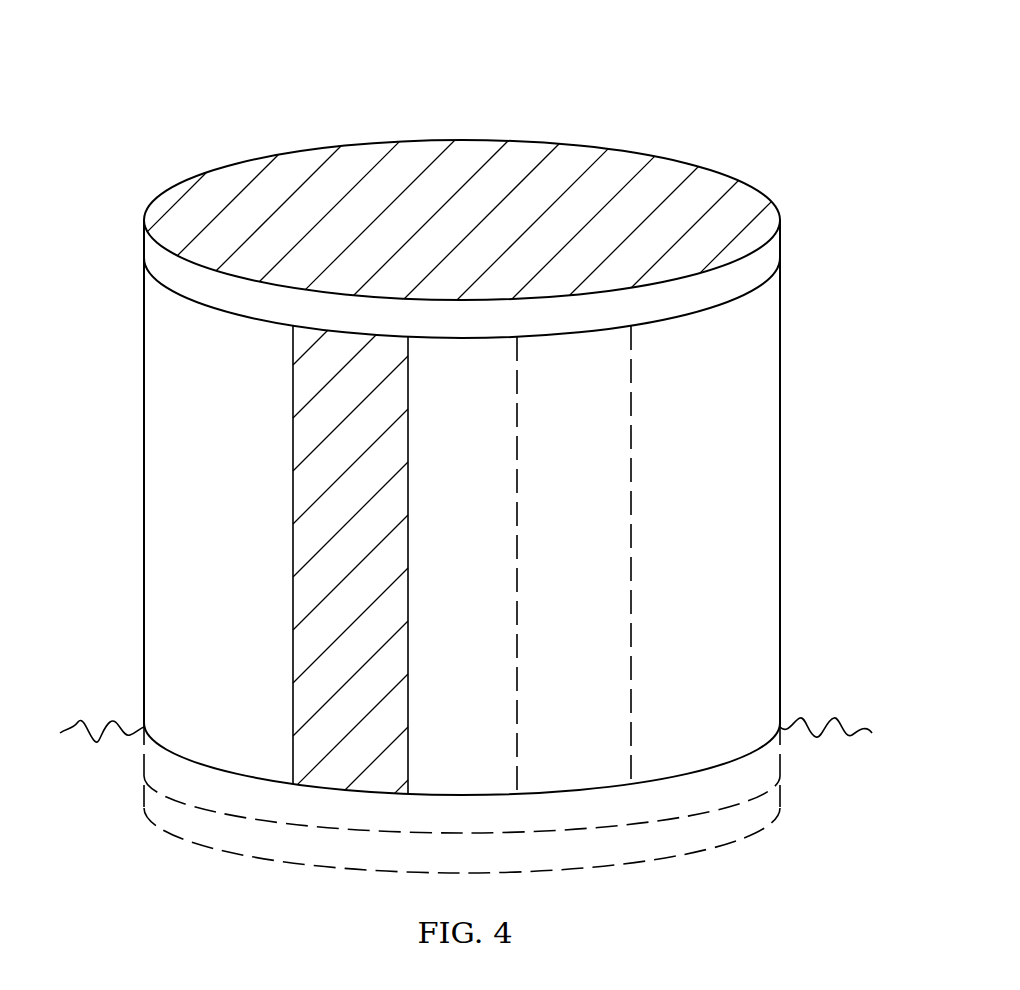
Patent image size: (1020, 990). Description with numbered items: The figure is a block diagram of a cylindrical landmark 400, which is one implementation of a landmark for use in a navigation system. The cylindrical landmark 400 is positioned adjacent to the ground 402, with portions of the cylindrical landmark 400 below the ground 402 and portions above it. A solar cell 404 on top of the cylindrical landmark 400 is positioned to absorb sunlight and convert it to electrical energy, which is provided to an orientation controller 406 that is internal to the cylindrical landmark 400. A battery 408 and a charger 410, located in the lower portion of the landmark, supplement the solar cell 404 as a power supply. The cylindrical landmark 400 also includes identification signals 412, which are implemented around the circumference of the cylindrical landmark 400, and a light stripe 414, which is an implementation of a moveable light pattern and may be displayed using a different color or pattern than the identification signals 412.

The cylindrical landmark 400 is at (462, 500).
The ground 402 is at (100, 745).
The solar cell 404 is at (308, 157).
The orientation controller 406 is at (578, 778).
The battery 408 is at (780, 760).
The charger 410 is at (780, 805).
The identification signal 412 is at (150, 519).
The light stripe 414 is at (332, 778).